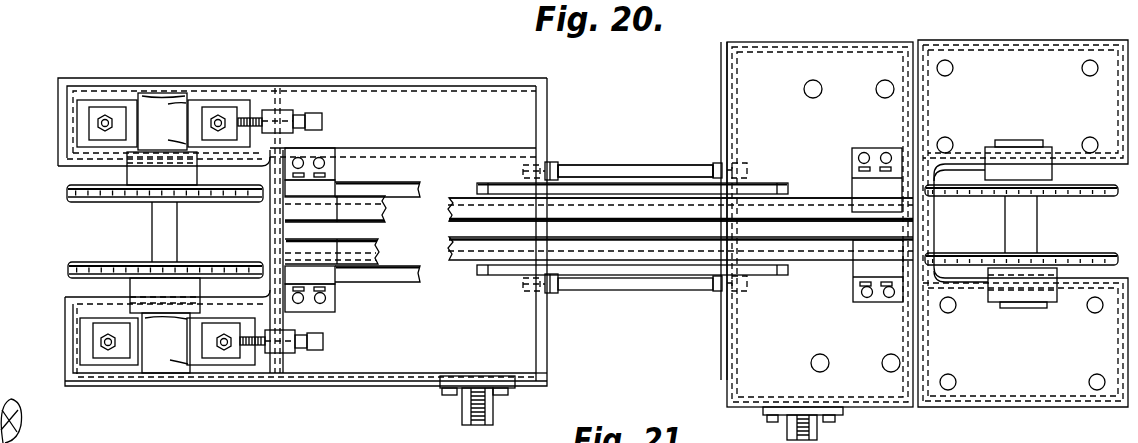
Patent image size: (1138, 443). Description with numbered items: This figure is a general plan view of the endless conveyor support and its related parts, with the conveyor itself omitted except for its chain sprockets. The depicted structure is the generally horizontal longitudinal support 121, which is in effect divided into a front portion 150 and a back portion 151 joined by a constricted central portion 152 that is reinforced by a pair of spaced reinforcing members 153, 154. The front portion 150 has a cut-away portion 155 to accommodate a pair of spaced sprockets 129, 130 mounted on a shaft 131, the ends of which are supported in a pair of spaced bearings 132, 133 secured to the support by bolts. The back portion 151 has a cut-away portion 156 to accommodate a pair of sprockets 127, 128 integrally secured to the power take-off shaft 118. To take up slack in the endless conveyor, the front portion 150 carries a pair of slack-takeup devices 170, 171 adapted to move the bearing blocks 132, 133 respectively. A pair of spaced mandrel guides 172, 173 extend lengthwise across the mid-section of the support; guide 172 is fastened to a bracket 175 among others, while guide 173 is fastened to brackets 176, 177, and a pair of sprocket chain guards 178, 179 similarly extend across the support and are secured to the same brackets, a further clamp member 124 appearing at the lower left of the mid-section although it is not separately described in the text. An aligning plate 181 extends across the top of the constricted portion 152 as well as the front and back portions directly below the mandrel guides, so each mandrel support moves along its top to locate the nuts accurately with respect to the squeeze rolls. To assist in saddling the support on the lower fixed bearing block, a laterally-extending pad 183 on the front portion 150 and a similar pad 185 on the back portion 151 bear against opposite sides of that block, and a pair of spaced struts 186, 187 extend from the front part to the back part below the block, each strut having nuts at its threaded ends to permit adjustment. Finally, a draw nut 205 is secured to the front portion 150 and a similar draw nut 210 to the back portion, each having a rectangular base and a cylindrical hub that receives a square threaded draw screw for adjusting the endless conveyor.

The power take-off shaft 118 is at (1015, 210).
The horizontal support 121 is at (91, 393).
The lower clamp block 124 is at (332, 286).
The sprocket 127 is at (1068, 260).
The sprocket 128 is at (1097, 193).
The sprocket 129 is at (90, 262).
The sprocket 130 is at (77, 200).
The shaft 131 is at (155, 218).
The bearing 132 is at (150, 358).
The bearing 133 is at (145, 103).
The front portion 150 is at (383, 367).
The back portion 151 is at (1042, 385).
The constricted central portion 152 is at (607, 178).
The reinforcing member 153 is at (562, 265).
The reinforcing member 154 is at (562, 188).
The cut-away portion 155 is at (70, 179).
The cut-away portion 156 is at (1073, 173).
The slack-takeup device 170 is at (272, 355).
The slack-takeup device 171 is at (265, 110).
The mandrel guide 172 is at (687, 245).
The mandrel guide 173 is at (673, 205).
The bracket 175 is at (855, 292).
The bracket 176 is at (332, 170).
The bracket 177 is at (857, 163).
The sprocket chain guard 178 is at (415, 282).
The sprocket chain guard 179 is at (405, 187).
The aligning plate 181 is at (437, 210).
The pad 183 is at (549, 368).
The pad 185 is at (723, 362).
The strut 186 is at (630, 283).
The strut 187 is at (630, 165).
The draw nut 205 is at (445, 404).
The draw nut 210 is at (837, 425).